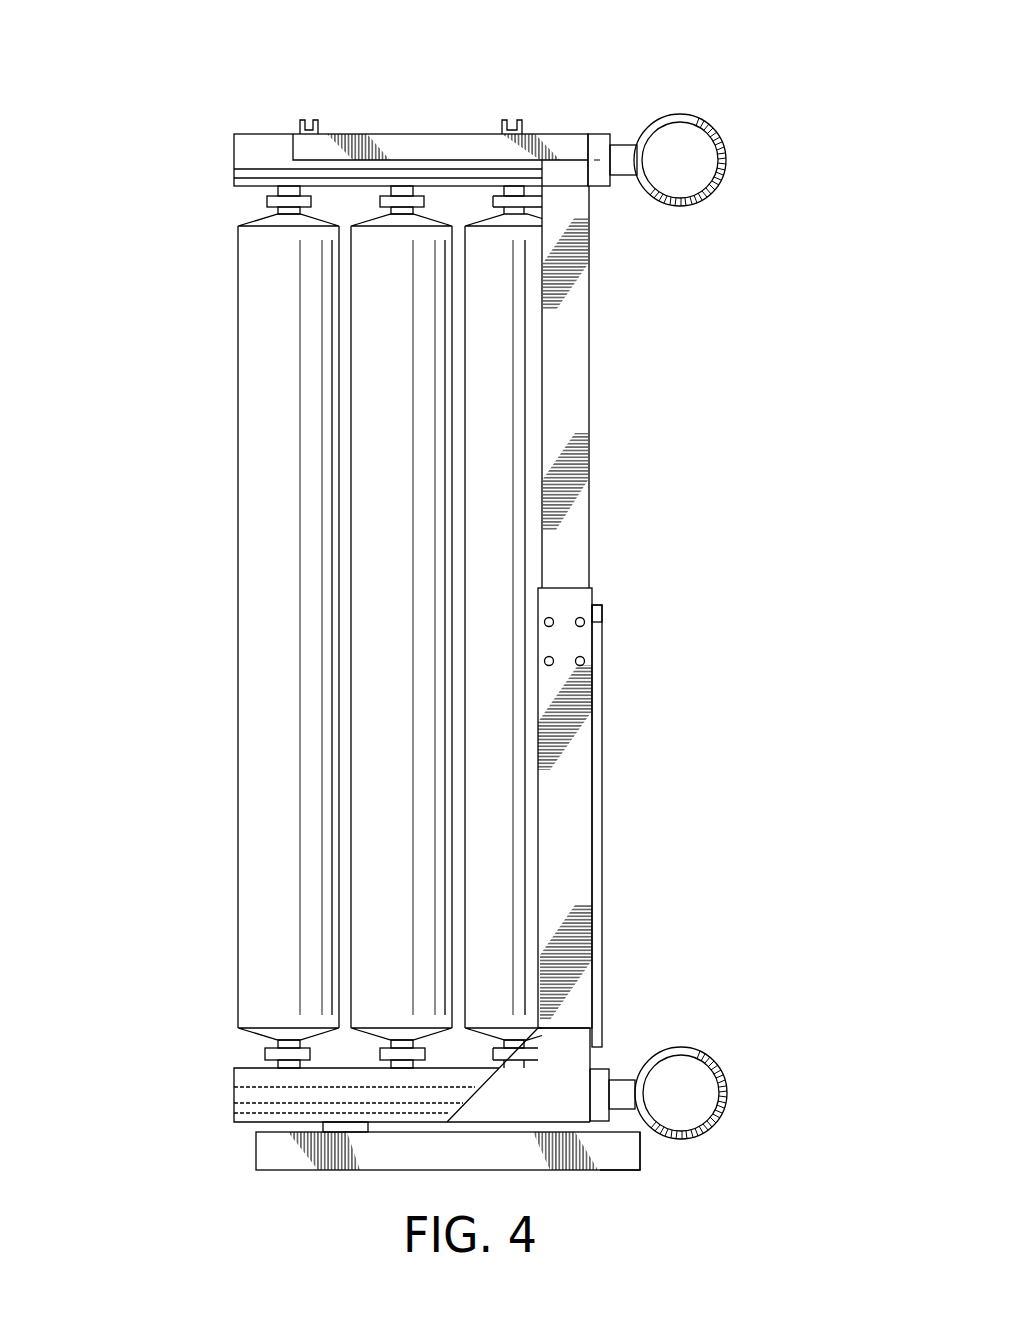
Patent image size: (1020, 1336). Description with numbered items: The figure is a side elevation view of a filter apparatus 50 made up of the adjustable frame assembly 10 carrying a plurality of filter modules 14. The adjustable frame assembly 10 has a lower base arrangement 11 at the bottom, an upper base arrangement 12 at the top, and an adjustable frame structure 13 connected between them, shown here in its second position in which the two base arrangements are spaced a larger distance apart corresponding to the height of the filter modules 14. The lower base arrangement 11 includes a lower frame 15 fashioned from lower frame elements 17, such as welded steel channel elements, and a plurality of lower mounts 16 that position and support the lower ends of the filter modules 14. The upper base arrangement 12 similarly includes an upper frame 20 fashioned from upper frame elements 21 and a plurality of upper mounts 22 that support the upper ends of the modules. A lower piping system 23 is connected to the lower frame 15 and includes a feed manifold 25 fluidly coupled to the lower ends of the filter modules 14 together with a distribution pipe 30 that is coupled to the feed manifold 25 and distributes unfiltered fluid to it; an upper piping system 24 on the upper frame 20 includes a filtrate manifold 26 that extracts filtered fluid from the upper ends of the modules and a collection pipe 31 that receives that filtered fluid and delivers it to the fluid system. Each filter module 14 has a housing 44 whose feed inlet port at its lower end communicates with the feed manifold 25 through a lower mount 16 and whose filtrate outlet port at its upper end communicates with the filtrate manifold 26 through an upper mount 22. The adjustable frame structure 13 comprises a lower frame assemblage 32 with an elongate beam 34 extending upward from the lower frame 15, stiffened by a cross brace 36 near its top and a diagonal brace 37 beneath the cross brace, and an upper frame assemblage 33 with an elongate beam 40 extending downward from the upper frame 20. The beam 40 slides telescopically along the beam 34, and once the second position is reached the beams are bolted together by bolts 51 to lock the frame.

The adjustable frame assembly 10 is at (575, 134).
The lower base arrangement 11 is at (256, 1150).
The upper base arrangement 12 is at (425, 134).
The adjustable frame structure 13 is at (563, 632).
The filter module 14 is at (378, 690).
The lower frame 15 is at (625, 1170).
The lower mount 16 is at (378, 1053).
The lower frame element 17 is at (367, 1152).
The upper frame 20 is at (503, 120).
The upper frame element 21 is at (352, 145).
The upper mount 22 is at (358, 204).
The lower piping system 23 is at (707, 1053).
The upper piping system 24 is at (723, 176).
The feed manifold 25 is at (234, 1090).
The filtrate manifold 26 is at (234, 155).
The distribution pipe 30 is at (723, 1115).
The collection pipe 31 is at (699, 118).
The lower frame assemblage 32 is at (578, 822).
The upper frame assemblage 33 is at (578, 332).
The elongate beam 34 is at (578, 862).
The cross brace 36 is at (602, 612).
The diagonal brace 37 is at (598, 745).
The elongate beam 40 is at (578, 405).
The housing 44 is at (378, 573).
The filter apparatus 50 is at (130, 117).
The bolt 51 is at (584, 663).